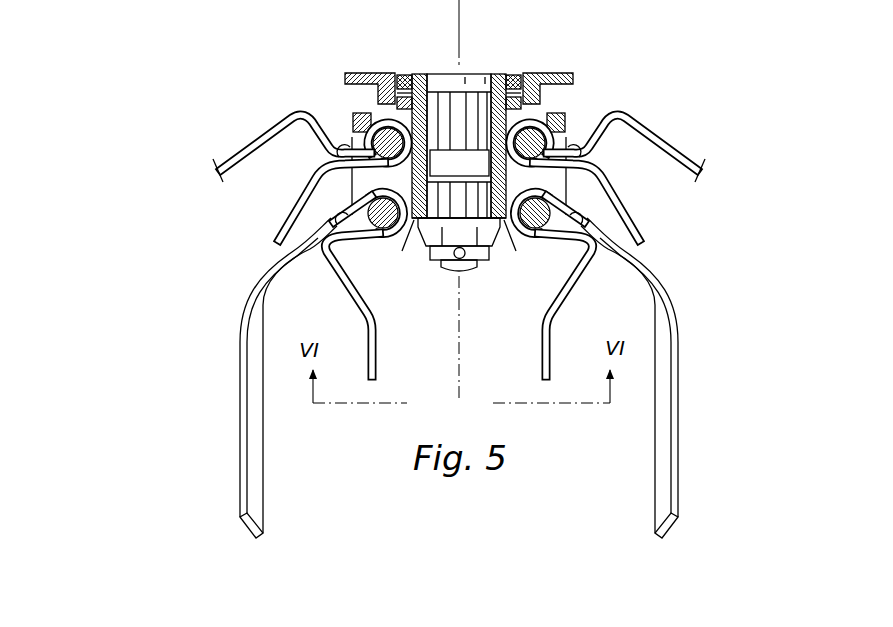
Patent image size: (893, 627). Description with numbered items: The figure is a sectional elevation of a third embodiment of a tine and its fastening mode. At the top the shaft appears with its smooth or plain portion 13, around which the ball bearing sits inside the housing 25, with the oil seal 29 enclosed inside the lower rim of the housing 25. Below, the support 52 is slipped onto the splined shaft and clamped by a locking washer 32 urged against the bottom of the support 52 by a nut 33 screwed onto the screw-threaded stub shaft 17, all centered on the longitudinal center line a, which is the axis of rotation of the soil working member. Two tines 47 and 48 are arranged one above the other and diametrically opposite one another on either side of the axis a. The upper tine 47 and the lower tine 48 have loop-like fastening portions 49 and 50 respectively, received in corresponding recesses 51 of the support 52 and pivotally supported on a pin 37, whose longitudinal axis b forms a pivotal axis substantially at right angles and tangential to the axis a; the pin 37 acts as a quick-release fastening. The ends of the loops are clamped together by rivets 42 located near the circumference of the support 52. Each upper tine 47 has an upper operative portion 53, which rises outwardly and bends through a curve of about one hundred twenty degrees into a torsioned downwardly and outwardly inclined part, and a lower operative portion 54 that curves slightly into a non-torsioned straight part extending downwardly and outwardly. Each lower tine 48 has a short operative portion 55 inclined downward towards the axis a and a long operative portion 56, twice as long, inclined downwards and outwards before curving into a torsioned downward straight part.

The smooth or plain portion 13 is at (446, 74).
The screw-threaded stub shaft 17 is at (467, 266).
The housing 25 is at (378, 73).
The oil seal 29 is at (508, 73).
The locking washer 32 is at (493, 250).
The nut 33 is at (438, 264).
The pin 37 is at (533, 197).
The rivets 42 is at (346, 247).
The upper tine 47 is at (279, 120).
The lower tine 48 is at (239, 363).
The loop-like fastening portion 49 is at (356, 120).
The loop-like fastening portion 50 is at (403, 252).
The recesses 51 is at (352, 190).
The support 52 is at (389, 106).
The upper operative portion 53 is at (222, 179).
The lower operative portion 54 is at (272, 235).
The short operative portion 55 is at (378, 366).
The operative portion 56 is at (243, 454).
The longitudinal center line a is at (460, 26).
The longitudinal axis of the pin b is at (388, 170).